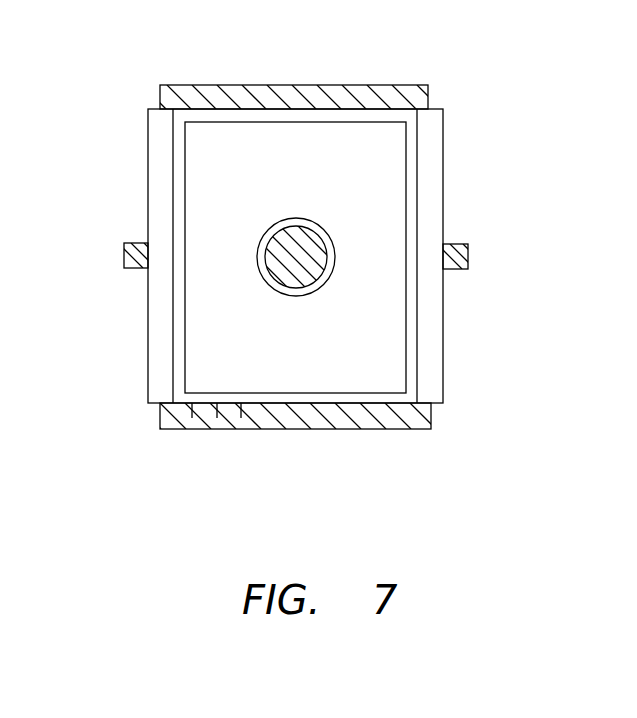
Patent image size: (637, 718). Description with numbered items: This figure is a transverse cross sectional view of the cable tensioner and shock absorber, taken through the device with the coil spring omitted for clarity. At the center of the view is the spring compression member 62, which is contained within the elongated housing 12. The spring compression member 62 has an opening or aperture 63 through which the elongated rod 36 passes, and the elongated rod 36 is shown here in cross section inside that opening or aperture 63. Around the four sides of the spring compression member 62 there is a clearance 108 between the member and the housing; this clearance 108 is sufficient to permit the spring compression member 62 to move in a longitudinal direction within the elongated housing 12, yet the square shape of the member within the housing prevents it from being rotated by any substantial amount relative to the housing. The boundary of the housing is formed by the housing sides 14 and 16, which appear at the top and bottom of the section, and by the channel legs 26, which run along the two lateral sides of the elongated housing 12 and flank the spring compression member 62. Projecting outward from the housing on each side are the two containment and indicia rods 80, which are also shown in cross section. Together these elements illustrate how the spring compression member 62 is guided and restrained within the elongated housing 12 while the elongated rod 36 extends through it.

The elongated housing 12 is at (214, 74).
The housing side 14 is at (360, 85).
The housing side 16 is at (372, 429).
The channel legs 26 is at (148, 147).
The elongated rod 36 is at (305, 225).
The spring compression member 62 is at (308, 169).
The opening or aperture 63 is at (297, 295).
The containment and indicia rods 80 is at (124, 245).
The clearance 108 is at (412, 145).